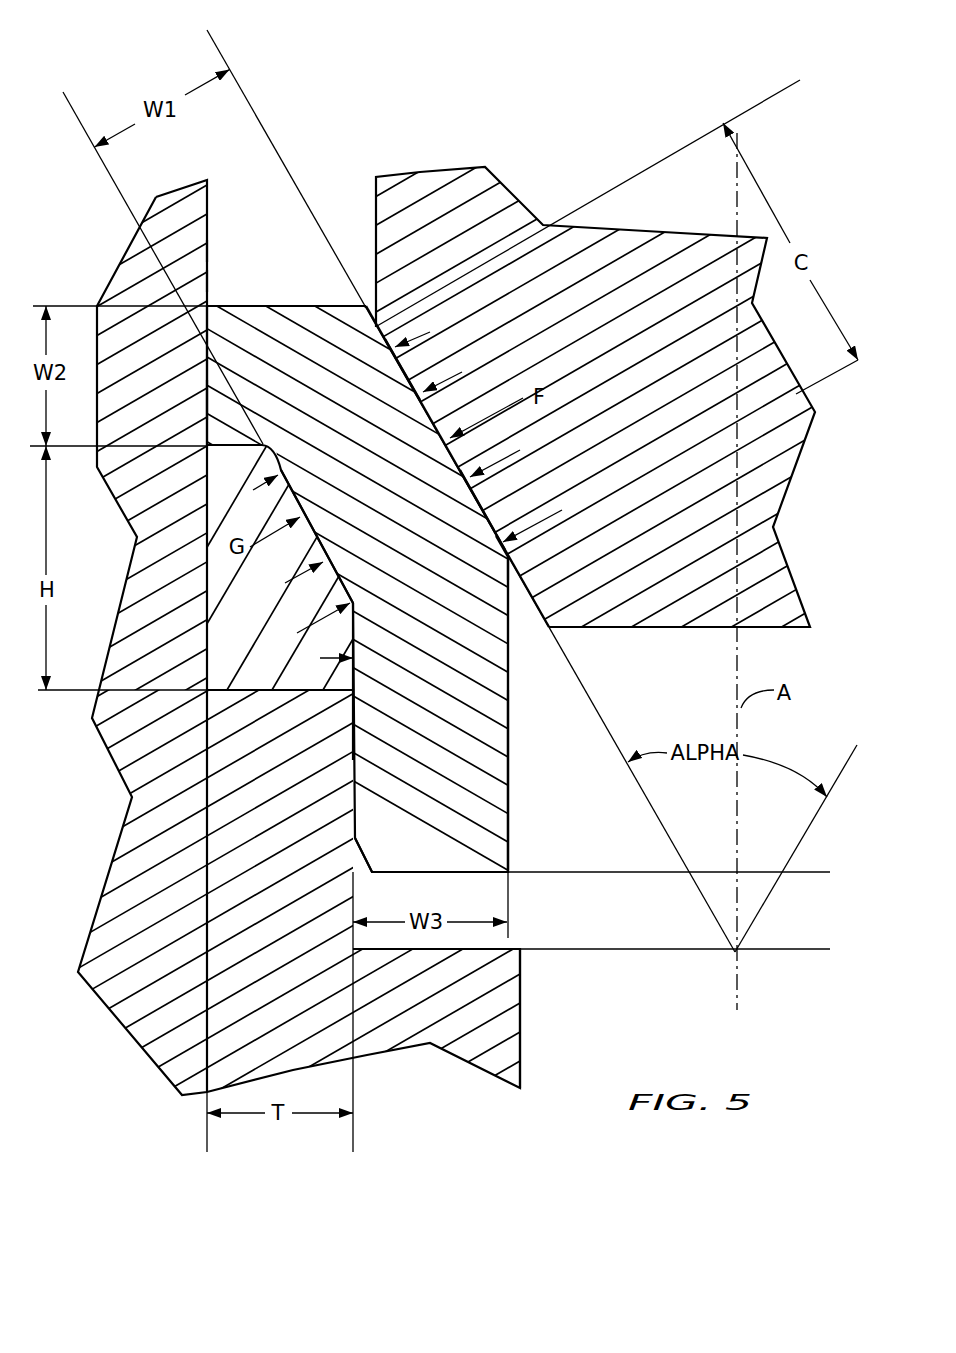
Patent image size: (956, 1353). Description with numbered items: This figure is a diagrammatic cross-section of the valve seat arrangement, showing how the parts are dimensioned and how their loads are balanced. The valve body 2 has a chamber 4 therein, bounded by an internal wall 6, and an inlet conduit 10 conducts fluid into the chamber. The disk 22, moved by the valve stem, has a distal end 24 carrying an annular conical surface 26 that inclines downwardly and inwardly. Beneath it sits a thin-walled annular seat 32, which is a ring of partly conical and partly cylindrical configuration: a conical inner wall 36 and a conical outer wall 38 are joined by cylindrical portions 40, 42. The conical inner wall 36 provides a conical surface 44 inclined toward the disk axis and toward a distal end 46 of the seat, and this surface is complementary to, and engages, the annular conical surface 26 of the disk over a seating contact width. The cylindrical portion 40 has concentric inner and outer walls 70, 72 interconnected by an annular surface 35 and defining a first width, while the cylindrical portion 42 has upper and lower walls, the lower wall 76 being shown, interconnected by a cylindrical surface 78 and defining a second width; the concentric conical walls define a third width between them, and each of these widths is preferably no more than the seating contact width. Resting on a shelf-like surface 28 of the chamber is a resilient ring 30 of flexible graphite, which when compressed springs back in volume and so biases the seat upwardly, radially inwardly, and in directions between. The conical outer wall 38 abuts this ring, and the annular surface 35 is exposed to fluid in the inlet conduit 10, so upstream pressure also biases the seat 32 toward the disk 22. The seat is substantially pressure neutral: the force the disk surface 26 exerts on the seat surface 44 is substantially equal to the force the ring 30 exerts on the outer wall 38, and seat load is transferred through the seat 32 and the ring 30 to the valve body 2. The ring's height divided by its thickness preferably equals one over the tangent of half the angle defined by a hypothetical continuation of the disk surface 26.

The valve body 2 is at (207, 218).
The chamber 4 is at (207, 252).
The internal wall 6 is at (207, 281).
The inlet conduit 10 is at (522, 1013).
The disk 22 is at (657, 529).
The distal end 24 is at (265, 304).
The annular conical surface 26 is at (520, 592).
The shelf-like surface 28 is at (252, 690).
The resilient ring 30 is at (227, 634).
The seat 32 is at (394, 570).
The annular surface 35 is at (440, 873).
The conical inner wall 36 is at (503, 493).
The conical outer wall 38 is at (287, 505).
The cylindrical portion 40 is at (412, 779).
The cylindrical portion 42 is at (233, 352).
The conical surface 44 is at (437, 360).
The distal end 46 is at (612, 873).
The inner wall 70 is at (510, 748).
The outer wall 72 is at (355, 727).
The lower wall 76 is at (253, 450).
The cylindrical surface 78 is at (205, 398).